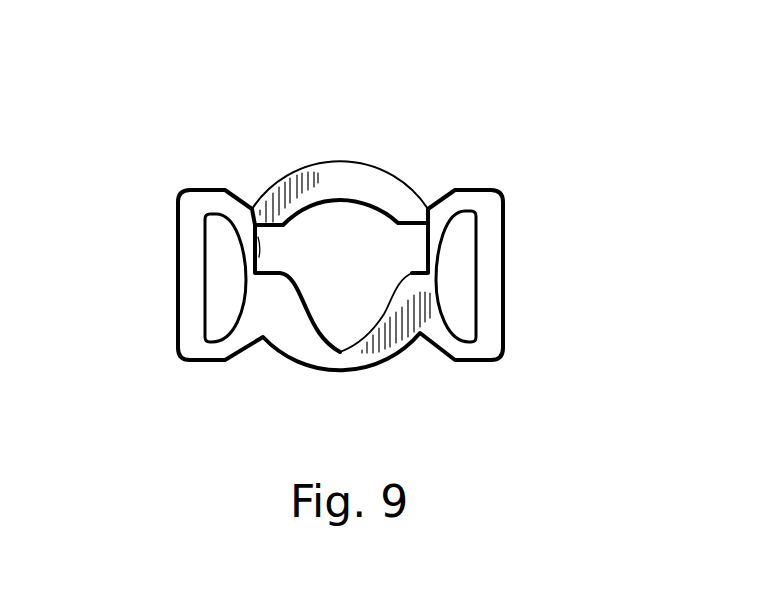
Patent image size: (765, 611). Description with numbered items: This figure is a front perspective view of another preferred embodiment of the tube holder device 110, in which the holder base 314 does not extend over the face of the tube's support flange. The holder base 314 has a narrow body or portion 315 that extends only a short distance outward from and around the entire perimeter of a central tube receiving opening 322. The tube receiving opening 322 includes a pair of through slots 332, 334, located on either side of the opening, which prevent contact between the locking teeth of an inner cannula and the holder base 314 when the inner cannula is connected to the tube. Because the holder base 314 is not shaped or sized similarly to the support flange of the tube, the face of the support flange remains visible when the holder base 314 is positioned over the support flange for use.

The device 110 is at (278, 90).
The holder base 314 is at (392, 130).
The narrow body or portion 315 is at (395, 205).
The tube receiving opening 322 is at (340, 310).
The through slot 332 is at (250, 212).
The through slot 334 is at (420, 247).